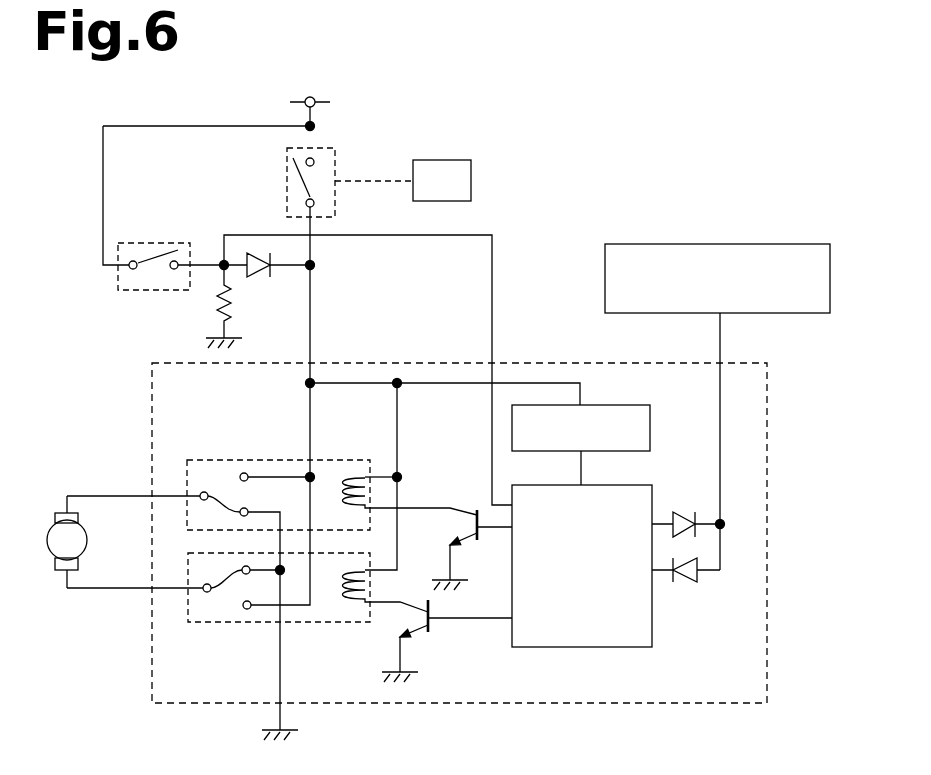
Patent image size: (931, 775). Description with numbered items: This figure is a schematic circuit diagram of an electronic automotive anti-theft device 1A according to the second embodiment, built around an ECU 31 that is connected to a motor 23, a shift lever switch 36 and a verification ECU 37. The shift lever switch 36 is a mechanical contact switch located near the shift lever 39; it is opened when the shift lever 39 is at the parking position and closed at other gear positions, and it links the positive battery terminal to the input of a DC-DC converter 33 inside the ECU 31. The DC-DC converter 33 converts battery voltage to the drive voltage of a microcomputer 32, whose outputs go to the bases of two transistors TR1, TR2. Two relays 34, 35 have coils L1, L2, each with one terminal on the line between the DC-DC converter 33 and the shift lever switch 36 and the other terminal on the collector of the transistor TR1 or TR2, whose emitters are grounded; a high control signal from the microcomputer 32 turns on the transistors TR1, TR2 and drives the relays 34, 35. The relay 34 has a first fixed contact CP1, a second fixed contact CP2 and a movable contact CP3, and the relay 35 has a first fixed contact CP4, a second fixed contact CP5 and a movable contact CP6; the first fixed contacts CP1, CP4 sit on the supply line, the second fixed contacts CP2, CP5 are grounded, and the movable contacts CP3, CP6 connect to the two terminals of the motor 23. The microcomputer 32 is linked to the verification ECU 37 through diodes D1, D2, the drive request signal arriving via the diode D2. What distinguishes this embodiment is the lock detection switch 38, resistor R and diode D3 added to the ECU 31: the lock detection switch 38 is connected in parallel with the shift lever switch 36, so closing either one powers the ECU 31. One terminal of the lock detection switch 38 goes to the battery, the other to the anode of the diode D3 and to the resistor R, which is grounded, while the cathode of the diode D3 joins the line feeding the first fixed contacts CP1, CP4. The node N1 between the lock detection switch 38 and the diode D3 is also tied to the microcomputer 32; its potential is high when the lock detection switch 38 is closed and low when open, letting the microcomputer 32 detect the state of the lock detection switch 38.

The door lock control system 1A is at (708, 169).
The motor 23 is at (48, 536).
The ECU 31 is at (767, 622).
The microcomputer 32 is at (630, 648).
The DC-DC converter 33 is at (632, 404).
The relay 34 is at (335, 447).
The relay 35 is at (305, 625).
The shift lever switch 36 is at (340, 162).
The verification ECU 37 is at (832, 278).
The lock detection switch 38 is at (150, 240).
The shift lever 39 is at (471, 180).
The node N1 is at (222, 262).
The resistor R is at (215, 305).
The diode D1 is at (677, 512).
The diode D2 is at (683, 585).
The diode D3 is at (258, 278).
The coil L1 is at (358, 474).
The coil L2 is at (352, 606).
The transistor TR1 is at (467, 508).
The transistor TR2 is at (433, 630).
The first fixed contact CP1 is at (245, 472).
The second fixed contact CP2 is at (224, 503).
The movable contact CP3 is at (202, 491).
The first fixed contact CP4 is at (247, 612).
The second fixed contact CP5 is at (233, 578).
The movable contact CP6 is at (203, 593).